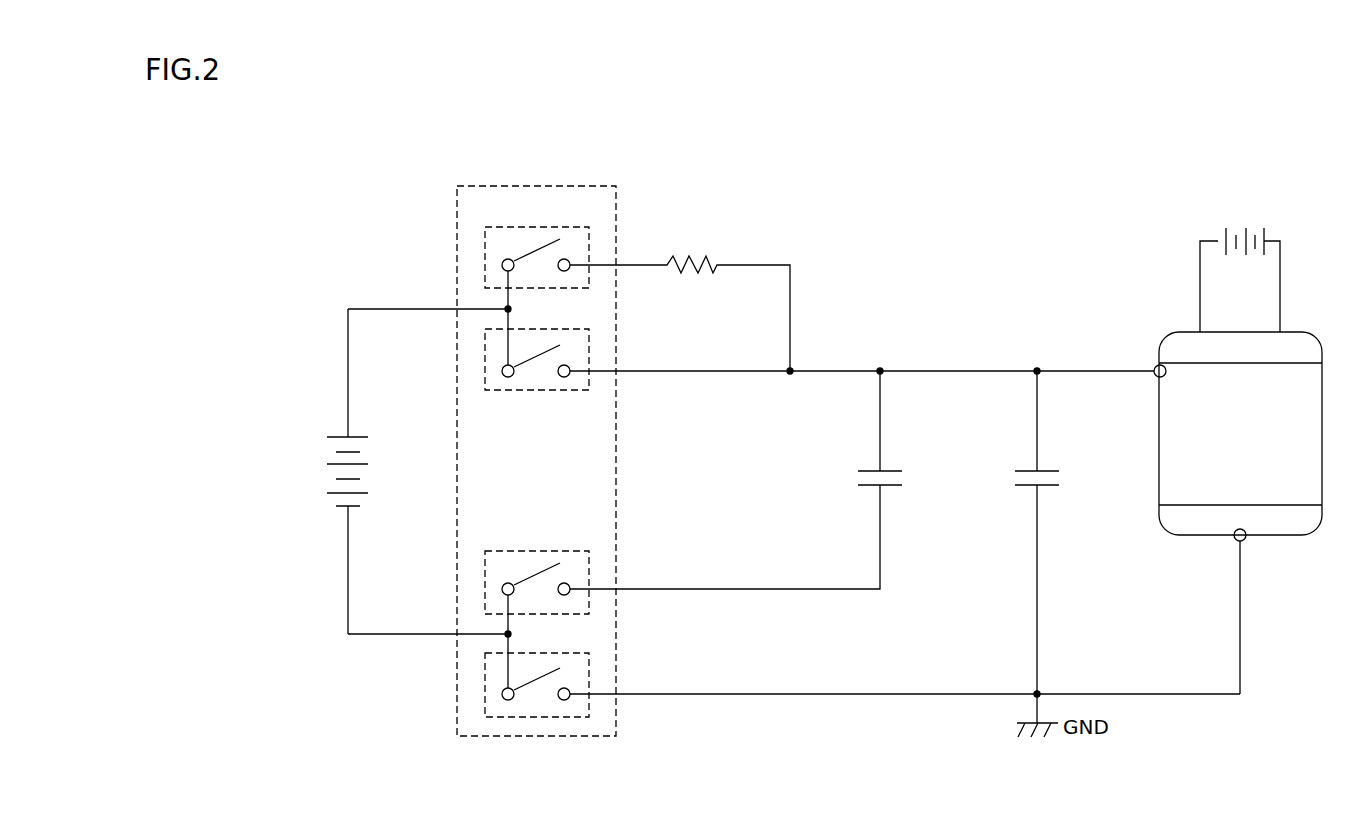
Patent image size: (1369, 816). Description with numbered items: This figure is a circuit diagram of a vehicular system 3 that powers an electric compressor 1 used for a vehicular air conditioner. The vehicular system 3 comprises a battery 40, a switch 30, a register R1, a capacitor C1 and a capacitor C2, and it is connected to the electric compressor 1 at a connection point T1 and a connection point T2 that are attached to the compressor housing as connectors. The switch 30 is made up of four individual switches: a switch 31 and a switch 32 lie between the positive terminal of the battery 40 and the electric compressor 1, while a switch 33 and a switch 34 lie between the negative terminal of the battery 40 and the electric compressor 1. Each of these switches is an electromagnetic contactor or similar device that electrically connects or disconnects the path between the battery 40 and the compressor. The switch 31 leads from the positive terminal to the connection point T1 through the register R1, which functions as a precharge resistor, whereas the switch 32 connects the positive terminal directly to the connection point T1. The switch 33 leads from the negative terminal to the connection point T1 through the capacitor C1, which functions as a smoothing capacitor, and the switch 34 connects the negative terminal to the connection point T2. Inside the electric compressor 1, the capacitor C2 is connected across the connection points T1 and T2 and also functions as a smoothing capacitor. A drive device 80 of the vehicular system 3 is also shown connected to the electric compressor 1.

The electric compressor 1 is at (1290, 332).
The vehicular system 3 is at (380, 247).
The switch 30 is at (568, 186).
The switch 31 is at (546, 227).
The switch 32 is at (546, 329).
The switch 33 is at (546, 551).
The switch 34 is at (546, 653).
The battery 40 is at (333, 436).
The drive device 80 is at (1259, 224).
The register R1 is at (688, 259).
The capacitor C1 is at (868, 470).
The capacitor C2 is at (1025, 470).
The connection point T1 is at (1155, 364).
The connection point T2 is at (1235, 545).